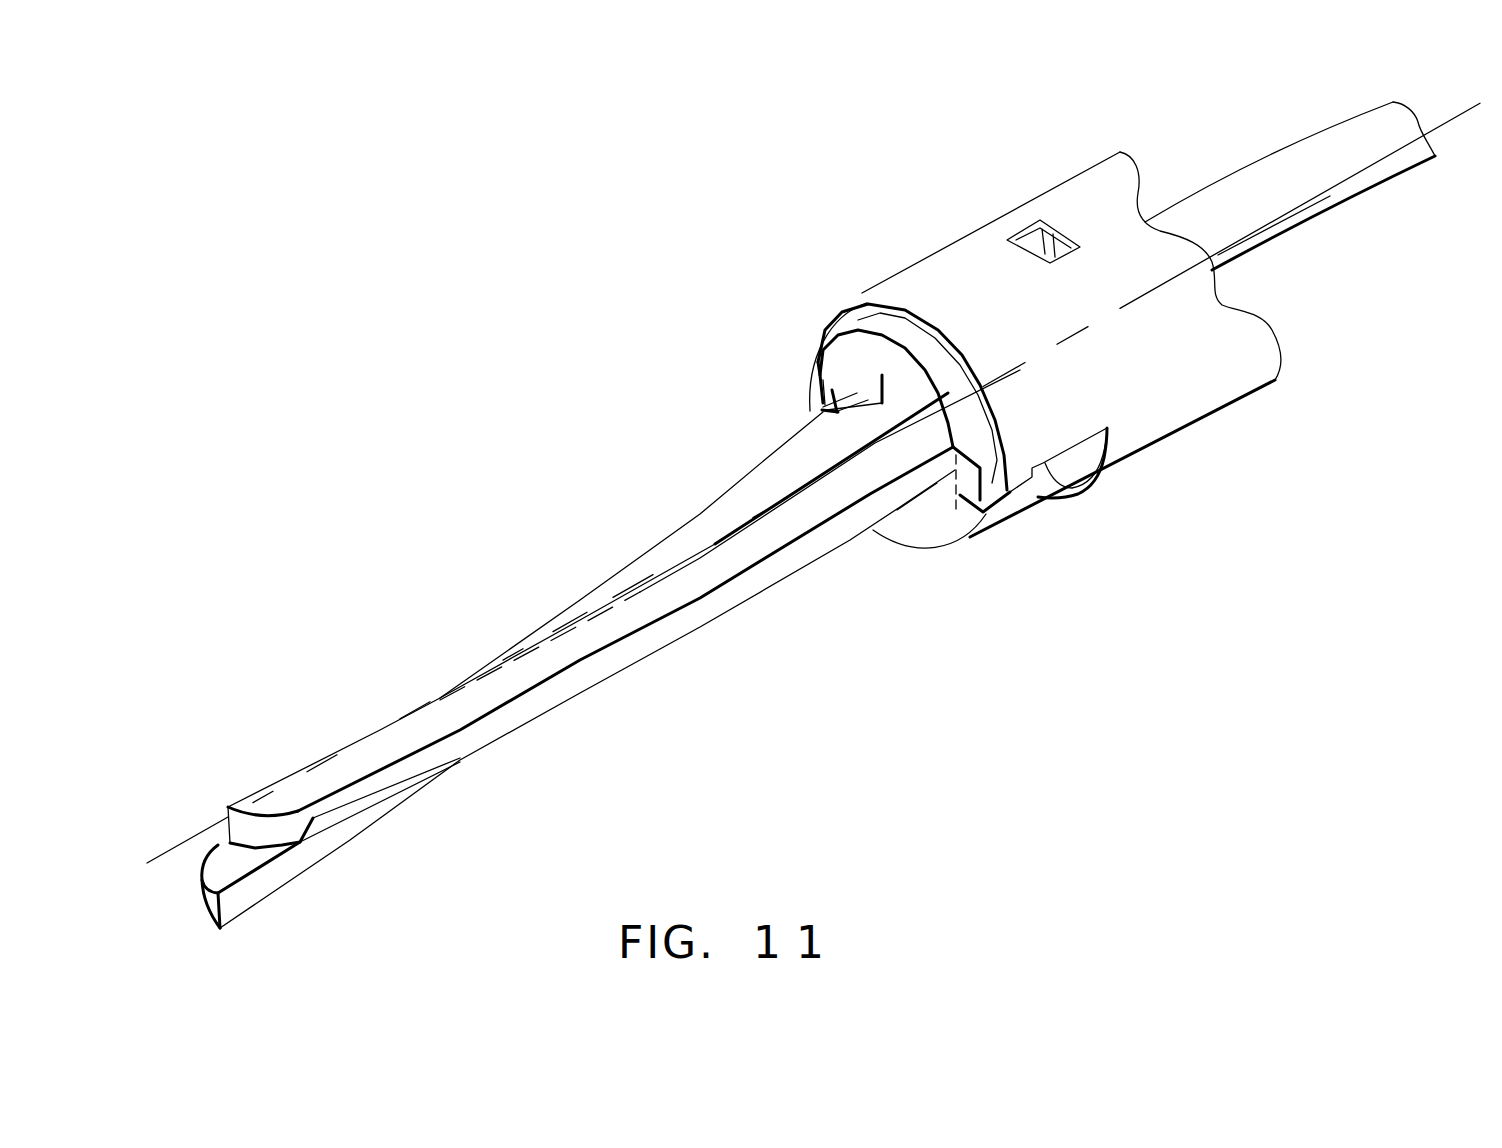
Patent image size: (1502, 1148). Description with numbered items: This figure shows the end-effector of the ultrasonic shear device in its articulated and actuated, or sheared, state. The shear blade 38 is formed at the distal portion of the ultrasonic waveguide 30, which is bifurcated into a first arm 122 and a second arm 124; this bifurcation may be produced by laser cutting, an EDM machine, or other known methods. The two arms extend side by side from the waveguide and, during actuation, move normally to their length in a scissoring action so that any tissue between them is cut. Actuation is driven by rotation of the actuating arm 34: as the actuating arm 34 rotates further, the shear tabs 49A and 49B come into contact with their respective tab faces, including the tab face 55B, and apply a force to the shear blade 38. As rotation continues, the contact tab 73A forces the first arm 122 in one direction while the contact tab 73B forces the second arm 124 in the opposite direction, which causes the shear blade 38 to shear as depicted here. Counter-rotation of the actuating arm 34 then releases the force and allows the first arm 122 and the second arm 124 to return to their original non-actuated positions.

The ultrasonic waveguide 30 is at (1292, 195).
The actuating arm 34 is at (1150, 363).
The shear blade 38 is at (652, 727).
The shear tab 49A is at (818, 413).
The shear tab 49B is at (987, 457).
The tab face 55B is at (973, 542).
The contact tab 73A is at (815, 411).
The contact tab 73B is at (1003, 510).
The first arm 122 is at (690, 530).
The second arm 124 is at (762, 584).